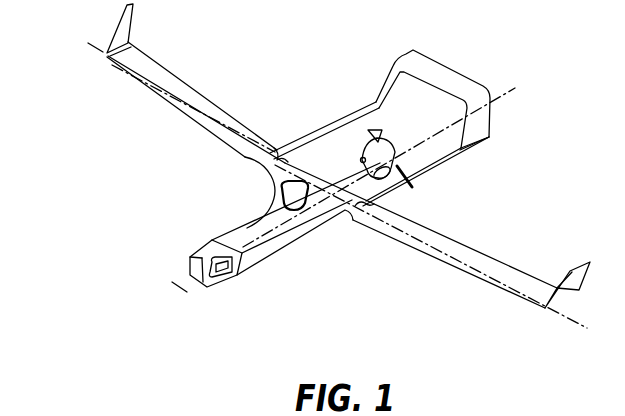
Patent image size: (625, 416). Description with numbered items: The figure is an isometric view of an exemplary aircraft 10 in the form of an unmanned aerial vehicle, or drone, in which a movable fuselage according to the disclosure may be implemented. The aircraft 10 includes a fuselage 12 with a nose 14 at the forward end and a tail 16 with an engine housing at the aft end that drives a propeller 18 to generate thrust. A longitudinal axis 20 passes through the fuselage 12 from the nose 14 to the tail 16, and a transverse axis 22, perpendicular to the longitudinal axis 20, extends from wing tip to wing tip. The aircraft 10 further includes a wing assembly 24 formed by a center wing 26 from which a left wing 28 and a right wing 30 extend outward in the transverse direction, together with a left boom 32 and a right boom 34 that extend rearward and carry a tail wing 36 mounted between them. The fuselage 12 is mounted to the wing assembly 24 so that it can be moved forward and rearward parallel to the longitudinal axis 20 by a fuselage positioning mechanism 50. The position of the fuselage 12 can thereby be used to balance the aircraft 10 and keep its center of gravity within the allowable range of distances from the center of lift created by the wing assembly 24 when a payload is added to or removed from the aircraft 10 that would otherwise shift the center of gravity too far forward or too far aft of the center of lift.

The aircraft 10 is at (243, 40).
The fuselage 12 is at (268, 243).
The nose 14 is at (190, 263).
The tail 16 is at (387, 150).
The propeller 18 is at (370, 134).
The longitudinal axis 20 is at (182, 289).
The transverse axis 22 is at (106, 52).
The wing assembly 24 is at (278, 112).
The center wing 26 is at (282, 175).
The left wing 28 is at (508, 278).
The right wing 30 is at (143, 63).
The left boom 32 is at (434, 167).
The right boom 34 is at (344, 114).
The tail wing 36 is at (478, 92).
The fuselage positioning mechanism 50 is at (573, 403).